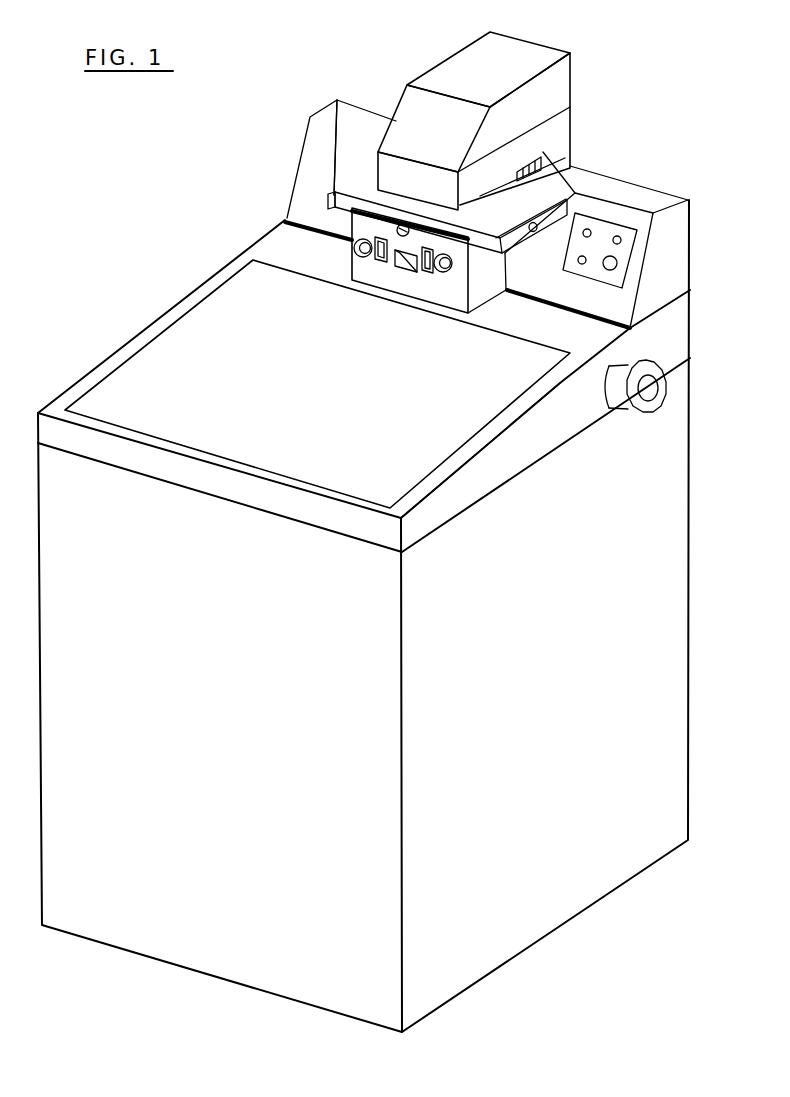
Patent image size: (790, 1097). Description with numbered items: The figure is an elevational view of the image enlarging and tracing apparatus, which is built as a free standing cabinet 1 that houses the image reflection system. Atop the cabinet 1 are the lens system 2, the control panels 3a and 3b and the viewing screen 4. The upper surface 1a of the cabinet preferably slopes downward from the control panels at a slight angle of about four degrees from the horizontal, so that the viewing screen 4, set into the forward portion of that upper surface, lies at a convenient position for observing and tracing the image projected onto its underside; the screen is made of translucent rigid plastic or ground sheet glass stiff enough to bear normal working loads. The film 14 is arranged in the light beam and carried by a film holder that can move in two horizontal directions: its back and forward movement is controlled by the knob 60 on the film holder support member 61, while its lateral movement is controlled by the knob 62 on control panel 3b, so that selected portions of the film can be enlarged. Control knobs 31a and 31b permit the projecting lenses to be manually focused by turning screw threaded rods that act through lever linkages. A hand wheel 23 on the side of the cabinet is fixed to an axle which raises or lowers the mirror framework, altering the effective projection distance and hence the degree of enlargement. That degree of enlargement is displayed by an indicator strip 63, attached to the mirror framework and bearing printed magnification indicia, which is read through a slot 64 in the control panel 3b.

The cabinet 1 is at (703, 496).
The upper surface 1a is at (458, 462).
The lens system 2 is at (633, 42).
The control panel 3a is at (620, 250).
The control panel 3b is at (360, 230).
The viewing screen 4 is at (203, 337).
The film 14 is at (522, 210).
The hand wheel 23 is at (657, 387).
The control knob 31a is at (353, 247).
The control knob 31b is at (443, 272).
The knob 60 is at (525, 212).
The film holder support member 61 is at (355, 180).
The knob 62 is at (397, 230).
The indicator strip 63 is at (370, 260).
The slot 64 is at (383, 263).